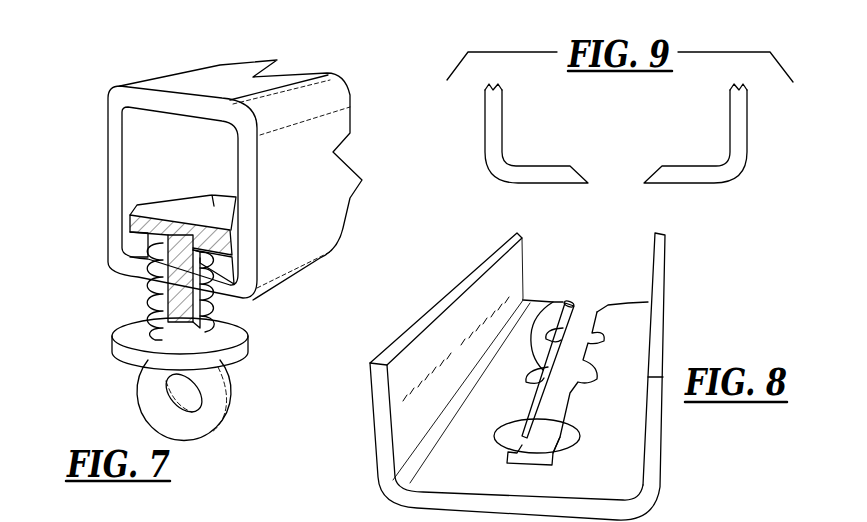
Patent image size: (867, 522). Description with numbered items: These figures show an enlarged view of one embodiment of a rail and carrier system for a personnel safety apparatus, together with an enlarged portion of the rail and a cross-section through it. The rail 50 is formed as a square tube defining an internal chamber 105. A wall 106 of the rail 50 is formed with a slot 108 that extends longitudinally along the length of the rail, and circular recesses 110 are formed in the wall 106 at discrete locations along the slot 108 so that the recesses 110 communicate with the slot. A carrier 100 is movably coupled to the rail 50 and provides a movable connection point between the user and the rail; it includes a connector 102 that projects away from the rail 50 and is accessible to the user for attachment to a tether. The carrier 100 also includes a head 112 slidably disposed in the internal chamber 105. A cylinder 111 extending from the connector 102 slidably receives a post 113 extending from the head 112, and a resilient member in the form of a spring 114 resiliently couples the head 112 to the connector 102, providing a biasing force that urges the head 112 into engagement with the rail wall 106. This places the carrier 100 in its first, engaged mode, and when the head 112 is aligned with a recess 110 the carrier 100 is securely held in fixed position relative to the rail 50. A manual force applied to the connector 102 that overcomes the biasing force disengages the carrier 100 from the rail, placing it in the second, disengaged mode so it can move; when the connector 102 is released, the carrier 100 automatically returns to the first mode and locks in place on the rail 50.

In FIG. 7, the rail 50 is at (198, 80).
In FIG. 8, the rail 50 is at (398, 333).
In FIG. 9, the rail 50 is at (745, 180).
In FIG. 7, the carrier 100 is at (119, 364).
In FIG. 7, the connector 102 is at (213, 398).
In FIG. 7, the internal chamber 105 is at (157, 113).
In FIG. 8, the wall 106 is at (578, 484).
In FIG. 9, the wall 106 is at (530, 166).
In FIG. 8, the slot 108 is at (567, 405).
In FIG. 9, the slot 108 is at (603, 185).
In FIG. 8, the circular recesses 110 is at (553, 300).
In FIG. 9, the circular recesses 110 is at (645, 177).
In FIG. 7, the cylinder 111 is at (218, 292).
In FIG. 7, the head 112 is at (187, 216).
In FIG. 7, the post 113 is at (177, 256).
In FIG. 7, the spring 114 is at (148, 288).